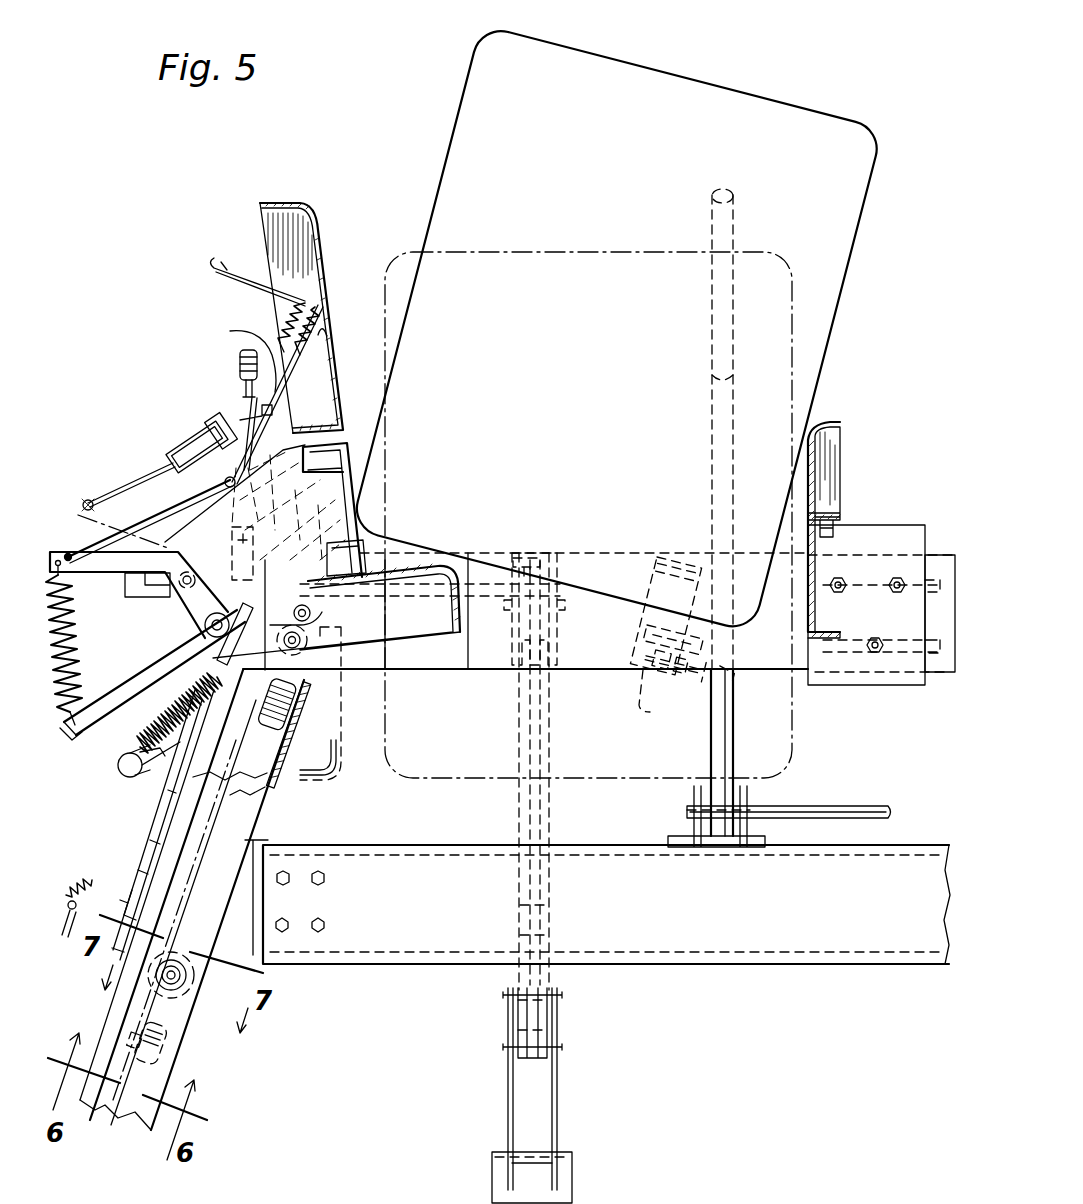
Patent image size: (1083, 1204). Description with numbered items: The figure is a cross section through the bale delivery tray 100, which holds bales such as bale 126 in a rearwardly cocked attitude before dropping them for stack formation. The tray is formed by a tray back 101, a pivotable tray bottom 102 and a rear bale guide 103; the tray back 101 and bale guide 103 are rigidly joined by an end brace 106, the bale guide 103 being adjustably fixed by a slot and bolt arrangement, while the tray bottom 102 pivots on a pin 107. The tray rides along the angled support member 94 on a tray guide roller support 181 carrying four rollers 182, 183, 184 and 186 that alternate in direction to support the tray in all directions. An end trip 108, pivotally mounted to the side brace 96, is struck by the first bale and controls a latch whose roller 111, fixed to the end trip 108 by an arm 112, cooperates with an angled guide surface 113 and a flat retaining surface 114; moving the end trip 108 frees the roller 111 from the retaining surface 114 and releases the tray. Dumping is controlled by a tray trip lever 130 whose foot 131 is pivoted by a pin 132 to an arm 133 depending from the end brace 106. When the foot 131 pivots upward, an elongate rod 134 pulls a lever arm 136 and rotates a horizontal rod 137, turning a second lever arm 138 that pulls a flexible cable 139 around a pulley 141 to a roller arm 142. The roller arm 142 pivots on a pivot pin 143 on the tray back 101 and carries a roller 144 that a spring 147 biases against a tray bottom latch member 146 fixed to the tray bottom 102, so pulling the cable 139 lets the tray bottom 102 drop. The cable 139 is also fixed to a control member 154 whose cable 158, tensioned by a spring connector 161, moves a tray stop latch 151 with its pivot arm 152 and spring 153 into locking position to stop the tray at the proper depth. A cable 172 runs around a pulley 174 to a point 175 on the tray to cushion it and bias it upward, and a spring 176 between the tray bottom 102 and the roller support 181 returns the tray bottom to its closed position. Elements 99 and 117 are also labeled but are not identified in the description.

The angled support member 94 is at (262, 832).
The side brace 96 is at (846, 968).
The upper bracket 99 is at (300, 204).
The delivery tray 100 is at (180, 378).
The tray back 101 is at (355, 460).
The tray bottom 102 is at (412, 560).
The rear bale guide 103 is at (832, 422).
The end brace 106 is at (573, 673).
The pin 107 is at (335, 612).
The end trip 108 is at (736, 224).
The roller 111 is at (650, 712).
The arm 112 is at (680, 680).
The angled guide surface 113 is at (654, 590).
The flat retaining surface 114 is at (638, 632).
The lever 117 is at (832, 805).
The bale 126 is at (642, 62).
The tray trip lever 130 is at (643, 1062).
The foot 131 is at (574, 1185).
The pin 132 is at (558, 1048).
The arm 133 is at (547, 822).
The elongate rod 134 is at (518, 912).
The lever arm 136 is at (531, 555).
The horizontal rod 137 is at (508, 540).
The lever arm 138 is at (226, 535).
The flexible cable 139 is at (238, 420).
The pulley 141 is at (182, 442).
The roller arm 142 is at (84, 510).
The pivot pin 143 is at (178, 608).
The roller 144 is at (207, 636).
The tray bottom latch member 146 is at (195, 688).
The spring 147 is at (80, 660).
The tray stop latch 151 is at (126, 870).
The pivot arm 152 is at (150, 825).
The spring 153 is at (90, 896).
The control member 154 is at (230, 331).
The cable 158 is at (120, 760).
The spring connector 161 is at (243, 362).
The cable 172 is at (215, 282).
The pulley 174 is at (290, 296).
The point 175 is at (222, 488).
The spring 176 is at (172, 712).
The tray guide roller support 181 is at (268, 842).
The roller 182 is at (176, 1066).
The roller 183 is at (186, 1010).
The roller 184 is at (285, 748).
The roller 186 is at (305, 648).